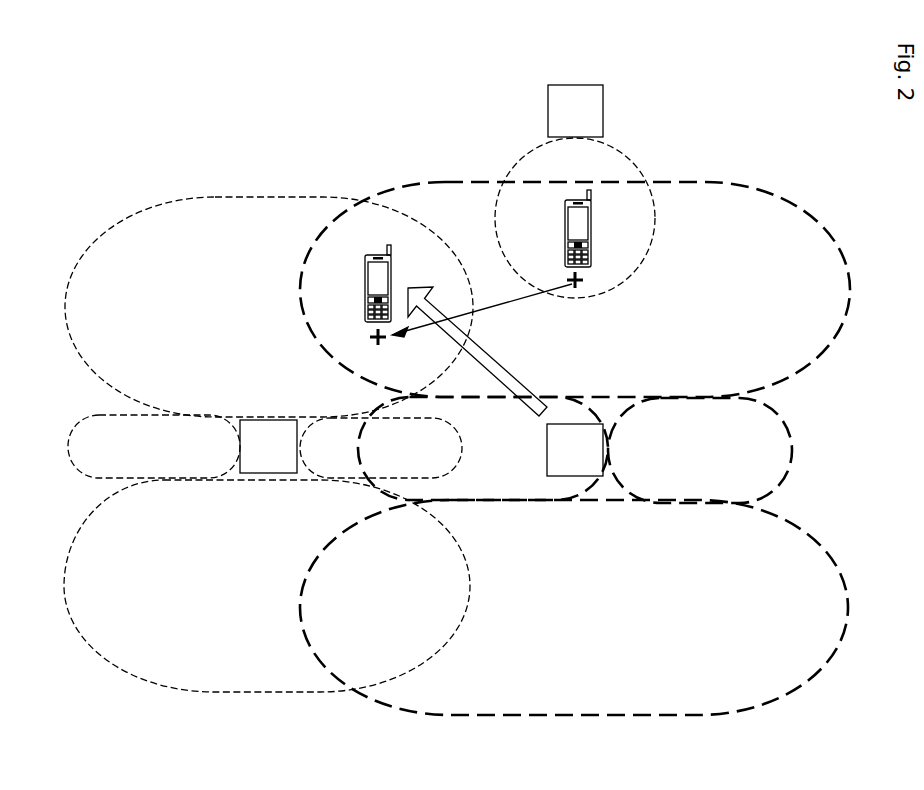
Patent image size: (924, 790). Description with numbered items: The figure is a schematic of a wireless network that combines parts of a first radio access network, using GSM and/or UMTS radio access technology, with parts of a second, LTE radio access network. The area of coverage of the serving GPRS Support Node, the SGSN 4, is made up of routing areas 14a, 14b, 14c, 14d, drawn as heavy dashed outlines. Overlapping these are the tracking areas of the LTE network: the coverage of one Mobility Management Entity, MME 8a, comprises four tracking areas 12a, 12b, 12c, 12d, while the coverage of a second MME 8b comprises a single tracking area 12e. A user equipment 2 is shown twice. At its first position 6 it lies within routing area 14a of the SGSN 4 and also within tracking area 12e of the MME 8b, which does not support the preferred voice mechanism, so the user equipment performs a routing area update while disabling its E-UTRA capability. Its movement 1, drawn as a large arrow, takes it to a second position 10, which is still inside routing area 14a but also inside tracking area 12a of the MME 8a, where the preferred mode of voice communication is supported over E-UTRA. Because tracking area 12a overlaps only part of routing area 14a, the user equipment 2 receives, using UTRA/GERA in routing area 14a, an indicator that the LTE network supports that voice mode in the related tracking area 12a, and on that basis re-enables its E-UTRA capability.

The handover / movement of user equipment 1 is at (514, 378).
The user equipment 2 is at (366, 282).
The serving General Packet Radio System Support Node (SGSN) 4 is at (585, 432).
The position 6 is at (586, 280).
The Mobility Management Entity (MME) 8a is at (266, 440).
The Mobility Management Entity (MME) 8b is at (603, 85).
The position 10 is at (369, 337).
The tracking area 12a is at (102, 232).
The tracking area 12b is at (78, 430).
The tracking area 12c is at (462, 442).
The tracking area 12d is at (92, 652).
The tracking area 12e is at (638, 160).
The routing area 14a is at (831, 232).
The routing area 14b is at (393, 400).
The routing area 14c is at (793, 448).
The routing area 14d is at (805, 684).